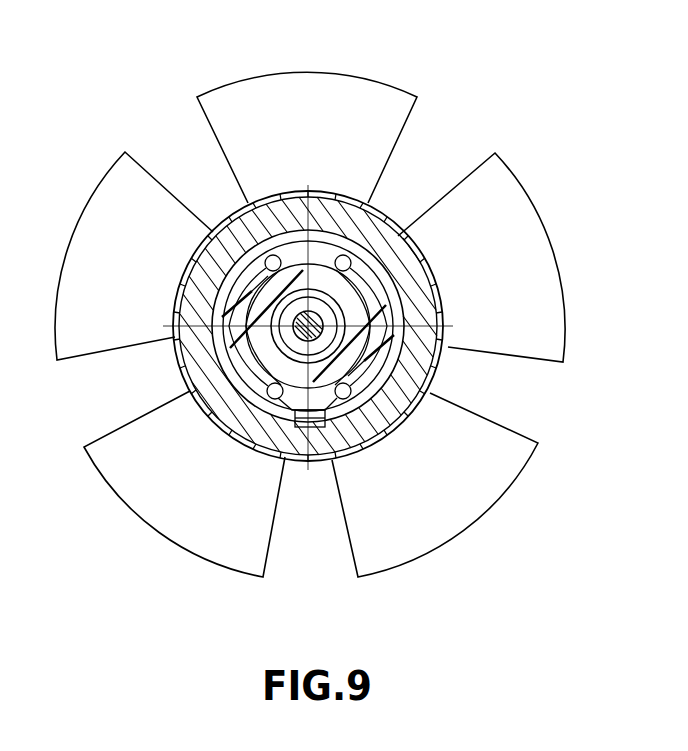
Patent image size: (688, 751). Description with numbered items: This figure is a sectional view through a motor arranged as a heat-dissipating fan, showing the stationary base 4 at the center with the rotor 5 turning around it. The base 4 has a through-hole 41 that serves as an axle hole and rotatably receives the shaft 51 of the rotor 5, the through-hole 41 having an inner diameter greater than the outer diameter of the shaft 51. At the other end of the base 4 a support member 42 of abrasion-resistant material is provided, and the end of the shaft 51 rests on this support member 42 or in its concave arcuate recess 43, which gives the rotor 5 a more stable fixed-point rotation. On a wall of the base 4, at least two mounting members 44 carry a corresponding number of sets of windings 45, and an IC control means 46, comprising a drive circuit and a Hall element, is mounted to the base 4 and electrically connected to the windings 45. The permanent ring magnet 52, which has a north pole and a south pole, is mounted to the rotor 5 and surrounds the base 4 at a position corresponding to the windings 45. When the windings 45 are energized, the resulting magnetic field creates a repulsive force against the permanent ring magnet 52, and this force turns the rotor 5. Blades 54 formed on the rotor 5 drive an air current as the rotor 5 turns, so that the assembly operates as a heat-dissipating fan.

The blades 54 is at (303, 96).
The permanent ring magnet 52 is at (398, 238).
The rotor 5 is at (432, 357).
The support member 42 is at (262, 250).
The base 4 is at (232, 338).
The IC control means 46 is at (322, 428).
The through-hole 41 is at (270, 392).
The windings 45 is at (373, 380).
The mounting members 44 is at (228, 330).
The shaft 51 is at (352, 322).
The concave arcuate recess 43 is at (308, 326).